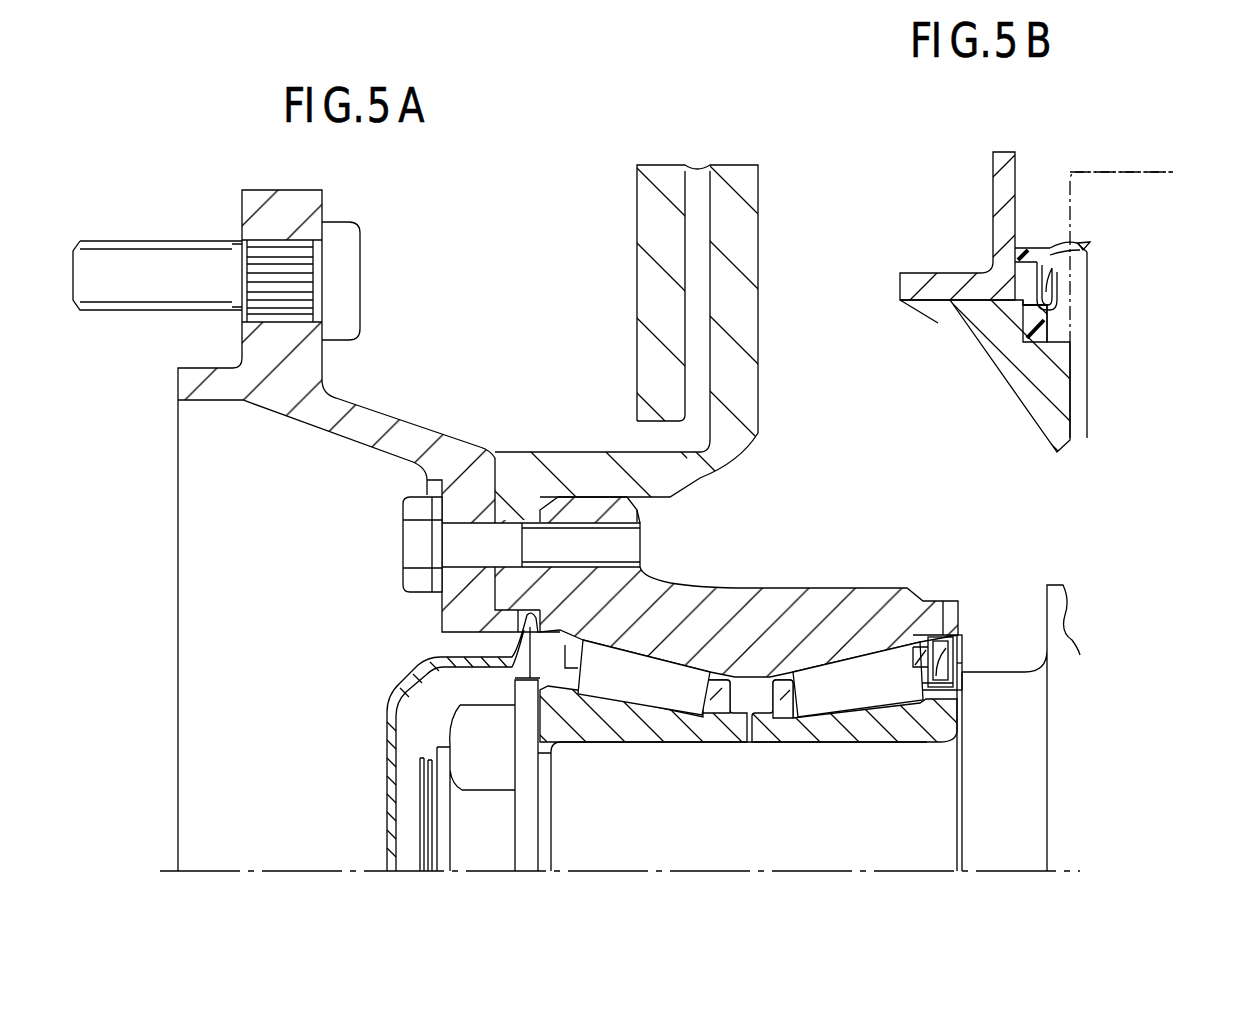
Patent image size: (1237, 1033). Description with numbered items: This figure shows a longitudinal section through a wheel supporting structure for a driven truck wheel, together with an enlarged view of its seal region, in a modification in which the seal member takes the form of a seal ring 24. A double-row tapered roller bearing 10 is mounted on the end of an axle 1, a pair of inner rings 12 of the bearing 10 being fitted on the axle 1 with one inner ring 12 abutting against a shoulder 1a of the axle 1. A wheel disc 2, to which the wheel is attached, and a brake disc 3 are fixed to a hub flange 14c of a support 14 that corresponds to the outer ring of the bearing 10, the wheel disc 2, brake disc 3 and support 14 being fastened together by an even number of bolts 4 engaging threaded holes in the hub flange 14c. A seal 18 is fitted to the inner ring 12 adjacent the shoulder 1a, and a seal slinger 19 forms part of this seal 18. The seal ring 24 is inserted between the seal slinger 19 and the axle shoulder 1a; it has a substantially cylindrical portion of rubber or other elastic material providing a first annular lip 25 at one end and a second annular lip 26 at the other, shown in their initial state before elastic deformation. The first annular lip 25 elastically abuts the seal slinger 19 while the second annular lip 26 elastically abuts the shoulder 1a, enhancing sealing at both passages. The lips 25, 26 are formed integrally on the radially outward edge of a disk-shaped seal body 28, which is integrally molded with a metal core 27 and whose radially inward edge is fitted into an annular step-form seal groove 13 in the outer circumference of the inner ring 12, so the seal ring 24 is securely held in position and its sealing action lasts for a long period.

In FIG. 5A, the axle 1 is at (753, 852).
In FIG. 5A, the shoulder of the axle 1a is at (987, 693).
In FIG. 5B, the shoulder of the axle 1a is at (1108, 172).
In FIG. 5A, the wheel disc 2 is at (421, 433).
In FIG. 5A, the brake disc 3 is at (598, 452).
In FIG. 5A, the bolts 4 is at (400, 550).
In FIG. 5A, the double-row tapered roller bearing 10 is at (840, 562).
In FIG. 5A, the inner rings 12 is at (633, 743).
In FIG. 5B, the inner rings 12 is at (977, 327).
In FIG. 5B, the seal groove 13 is at (1040, 360).
In FIG. 5A, the support 14 is at (726, 531).
In FIG. 5A, the hub flange 14c is at (577, 500).
In FIG. 5A, the seal 18 is at (943, 635).
In FIG. 5A, the seal slinger 19 is at (957, 653).
In FIG. 5B, the seal slinger 19 is at (993, 198).
In FIG. 5A, the seal ring 24 is at (960, 670).
In FIG. 5B, the seal ring 24 is at (1110, 268).
In FIG. 5B, the first annular lip 25 is at (1022, 247).
In FIG. 5B, the second annular lip 26 is at (1090, 240).
In FIG. 5B, the metal core 27 is at (1060, 280).
In FIG. 5B, the seal body 28 is at (1067, 310).